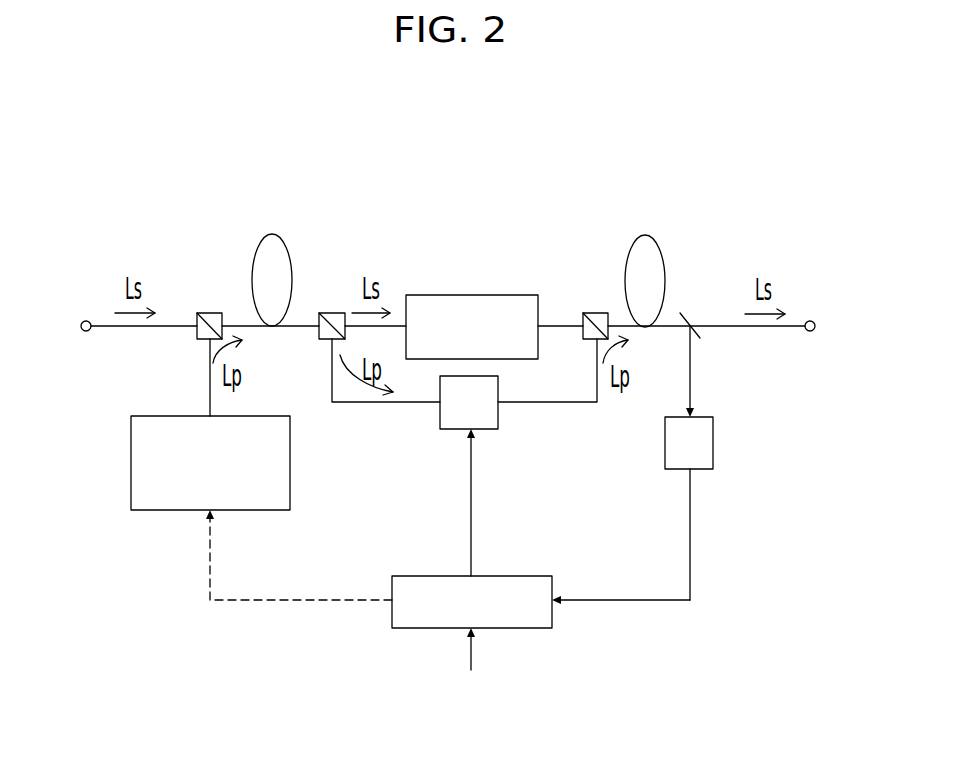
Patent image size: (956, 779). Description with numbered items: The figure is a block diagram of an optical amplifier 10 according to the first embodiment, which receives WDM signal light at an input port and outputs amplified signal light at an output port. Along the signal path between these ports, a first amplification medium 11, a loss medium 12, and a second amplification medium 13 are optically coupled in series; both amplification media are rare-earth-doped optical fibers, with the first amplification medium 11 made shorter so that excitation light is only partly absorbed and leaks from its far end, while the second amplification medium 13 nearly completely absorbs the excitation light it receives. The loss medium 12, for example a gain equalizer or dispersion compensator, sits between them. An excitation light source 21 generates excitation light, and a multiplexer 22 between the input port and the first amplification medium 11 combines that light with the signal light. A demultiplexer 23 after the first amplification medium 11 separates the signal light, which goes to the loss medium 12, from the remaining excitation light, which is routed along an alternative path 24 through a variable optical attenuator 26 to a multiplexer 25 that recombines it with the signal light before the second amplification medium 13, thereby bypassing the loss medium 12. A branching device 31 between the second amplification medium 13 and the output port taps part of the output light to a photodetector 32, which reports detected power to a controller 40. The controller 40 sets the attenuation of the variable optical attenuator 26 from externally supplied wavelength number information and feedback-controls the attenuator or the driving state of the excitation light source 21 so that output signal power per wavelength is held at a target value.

The optical amplifier 10 is at (135, 203).
The first amplification medium 11 is at (272, 234).
The loss medium 12 is at (471, 295).
The second amplification medium 13 is at (645, 235).
The excitation light source 21 is at (290, 460).
The multiplexer 22 is at (200, 313).
The demultiplexer 23 is at (333, 313).
The alternative path 24 is at (385, 403).
The multiplexer 25 is at (598, 313).
The variable optical attenuator 26 is at (450, 430).
The branching device 31 is at (694, 322).
The photodetector 32 is at (713, 455).
The controller 40 is at (500, 576).